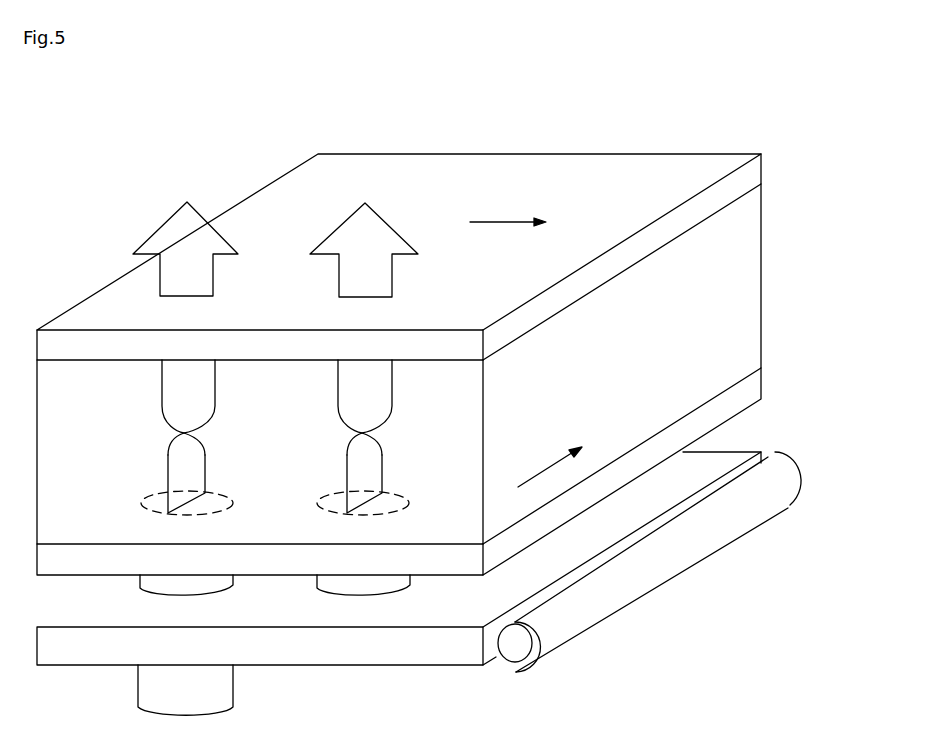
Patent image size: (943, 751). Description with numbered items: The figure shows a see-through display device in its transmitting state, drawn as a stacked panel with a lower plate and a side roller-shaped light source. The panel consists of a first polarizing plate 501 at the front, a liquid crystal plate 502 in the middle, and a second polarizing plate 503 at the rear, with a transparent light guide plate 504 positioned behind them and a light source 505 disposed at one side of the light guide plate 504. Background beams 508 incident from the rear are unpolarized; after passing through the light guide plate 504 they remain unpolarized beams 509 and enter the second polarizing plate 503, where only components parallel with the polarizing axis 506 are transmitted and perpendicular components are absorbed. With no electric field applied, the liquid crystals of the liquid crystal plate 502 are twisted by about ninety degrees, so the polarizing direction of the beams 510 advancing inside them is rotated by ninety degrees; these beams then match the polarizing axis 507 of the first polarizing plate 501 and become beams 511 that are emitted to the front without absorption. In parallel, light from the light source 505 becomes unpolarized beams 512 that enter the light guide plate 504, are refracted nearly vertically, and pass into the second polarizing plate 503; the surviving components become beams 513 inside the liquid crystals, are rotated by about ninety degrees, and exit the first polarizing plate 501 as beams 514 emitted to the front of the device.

The first polarizing plate 501 is at (686, 138).
The liquid crystal plate 502 is at (755, 283).
The second polarizing plate 503 is at (755, 383).
The transparent light guide plate 504 is at (415, 650).
The light source 505 is at (675, 557).
The polarizing axis 506 is at (558, 462).
The polarizing axis 507 is at (507, 222).
The background beams 508 is at (228, 688).
The unpolarized beams 509 is at (230, 581).
The beams 510 is at (178, 434).
The beams 511 is at (227, 235).
The unpolarized beams 512 is at (393, 589).
The beams 513 is at (356, 434).
The beams 514 is at (385, 222).